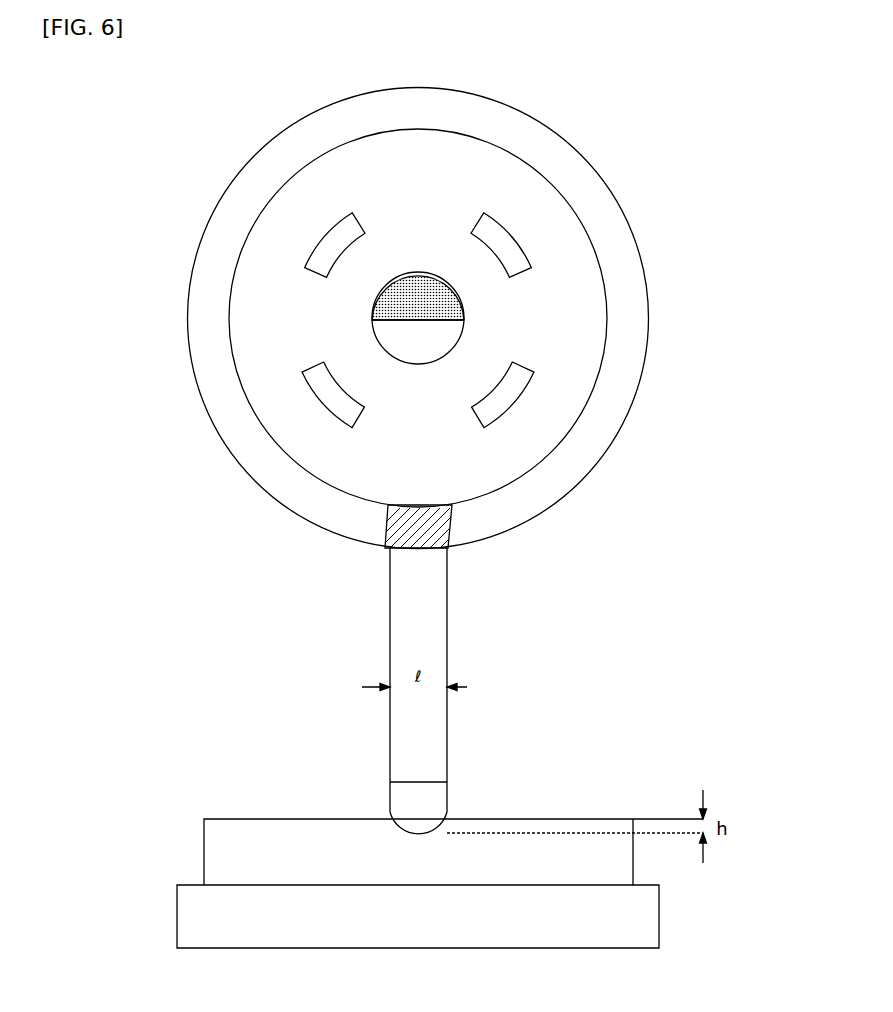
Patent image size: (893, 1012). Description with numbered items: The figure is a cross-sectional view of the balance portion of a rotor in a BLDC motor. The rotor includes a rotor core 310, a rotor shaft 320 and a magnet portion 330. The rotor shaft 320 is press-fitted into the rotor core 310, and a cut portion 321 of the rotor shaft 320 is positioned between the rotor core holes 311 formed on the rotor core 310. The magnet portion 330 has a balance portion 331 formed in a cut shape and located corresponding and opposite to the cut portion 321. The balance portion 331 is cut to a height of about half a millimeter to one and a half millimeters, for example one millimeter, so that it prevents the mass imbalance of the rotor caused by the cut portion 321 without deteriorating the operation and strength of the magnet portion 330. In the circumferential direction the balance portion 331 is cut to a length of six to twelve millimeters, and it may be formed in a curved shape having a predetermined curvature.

The rotor core 310 is at (565, 365).
The rotor core holes 311 is at (513, 400).
The rotor shaft 320 is at (461, 326).
The cut portion 321 is at (447, 282).
The magnet portion 330 is at (218, 852).
The balance portion 331 is at (408, 832).